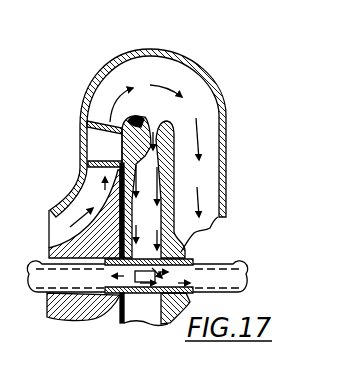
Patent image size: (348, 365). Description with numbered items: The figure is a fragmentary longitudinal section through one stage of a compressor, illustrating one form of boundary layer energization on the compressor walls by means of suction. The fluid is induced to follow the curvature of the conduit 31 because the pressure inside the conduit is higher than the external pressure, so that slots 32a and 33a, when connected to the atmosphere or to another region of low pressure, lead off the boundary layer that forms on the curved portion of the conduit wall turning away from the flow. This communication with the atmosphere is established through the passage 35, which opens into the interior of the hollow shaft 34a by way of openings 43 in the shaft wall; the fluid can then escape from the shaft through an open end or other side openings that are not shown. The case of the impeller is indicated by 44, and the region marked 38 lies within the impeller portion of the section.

The conduit 31 is at (206, 125).
The slot 32a is at (137, 124).
The slot 33a is at (158, 122).
The shaft 34a is at (212, 267).
The passage 35 is at (147, 217).
The impeller hub 38 is at (67, 232).
The openings 43 is at (135, 279).
The case of the impeller 44 is at (92, 98).